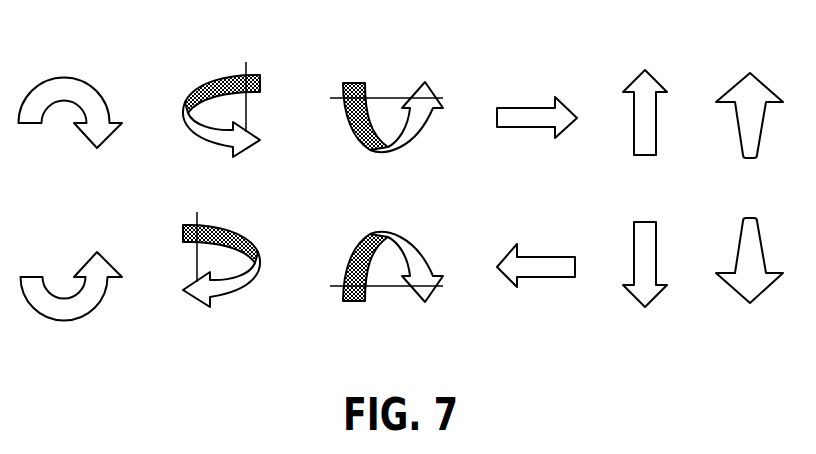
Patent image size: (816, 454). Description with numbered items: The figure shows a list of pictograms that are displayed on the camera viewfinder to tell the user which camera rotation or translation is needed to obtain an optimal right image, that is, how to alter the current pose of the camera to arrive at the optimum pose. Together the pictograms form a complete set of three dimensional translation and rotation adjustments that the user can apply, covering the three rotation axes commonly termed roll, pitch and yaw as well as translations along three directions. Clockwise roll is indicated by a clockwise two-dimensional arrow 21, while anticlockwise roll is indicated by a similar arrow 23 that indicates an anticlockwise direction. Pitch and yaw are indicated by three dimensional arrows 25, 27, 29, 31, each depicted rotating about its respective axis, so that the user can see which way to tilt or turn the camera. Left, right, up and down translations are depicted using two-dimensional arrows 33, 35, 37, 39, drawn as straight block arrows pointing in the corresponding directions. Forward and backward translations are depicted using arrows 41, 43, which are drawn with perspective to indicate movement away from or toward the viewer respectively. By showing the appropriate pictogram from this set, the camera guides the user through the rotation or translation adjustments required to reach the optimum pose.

The clockwise two-dimensional arrow 21 is at (52, 77).
The anticlockwise arrow 23 is at (53, 320).
The three dimensional arrow 25 is at (217, 76).
The three dimensional arrow 27 is at (235, 293).
The three dimensional arrow 29 is at (353, 82).
The three dimensional arrow 31 is at (355, 302).
The two-dimensional translation arrow 33 is at (532, 106).
The two-dimensional translation arrow 35 is at (547, 278).
The two-dimensional translation arrow 37 is at (653, 75).
The two-dimensional translation arrow 39 is at (652, 300).
The perspective arrow 41 is at (765, 85).
The perspective arrow 43 is at (763, 293).